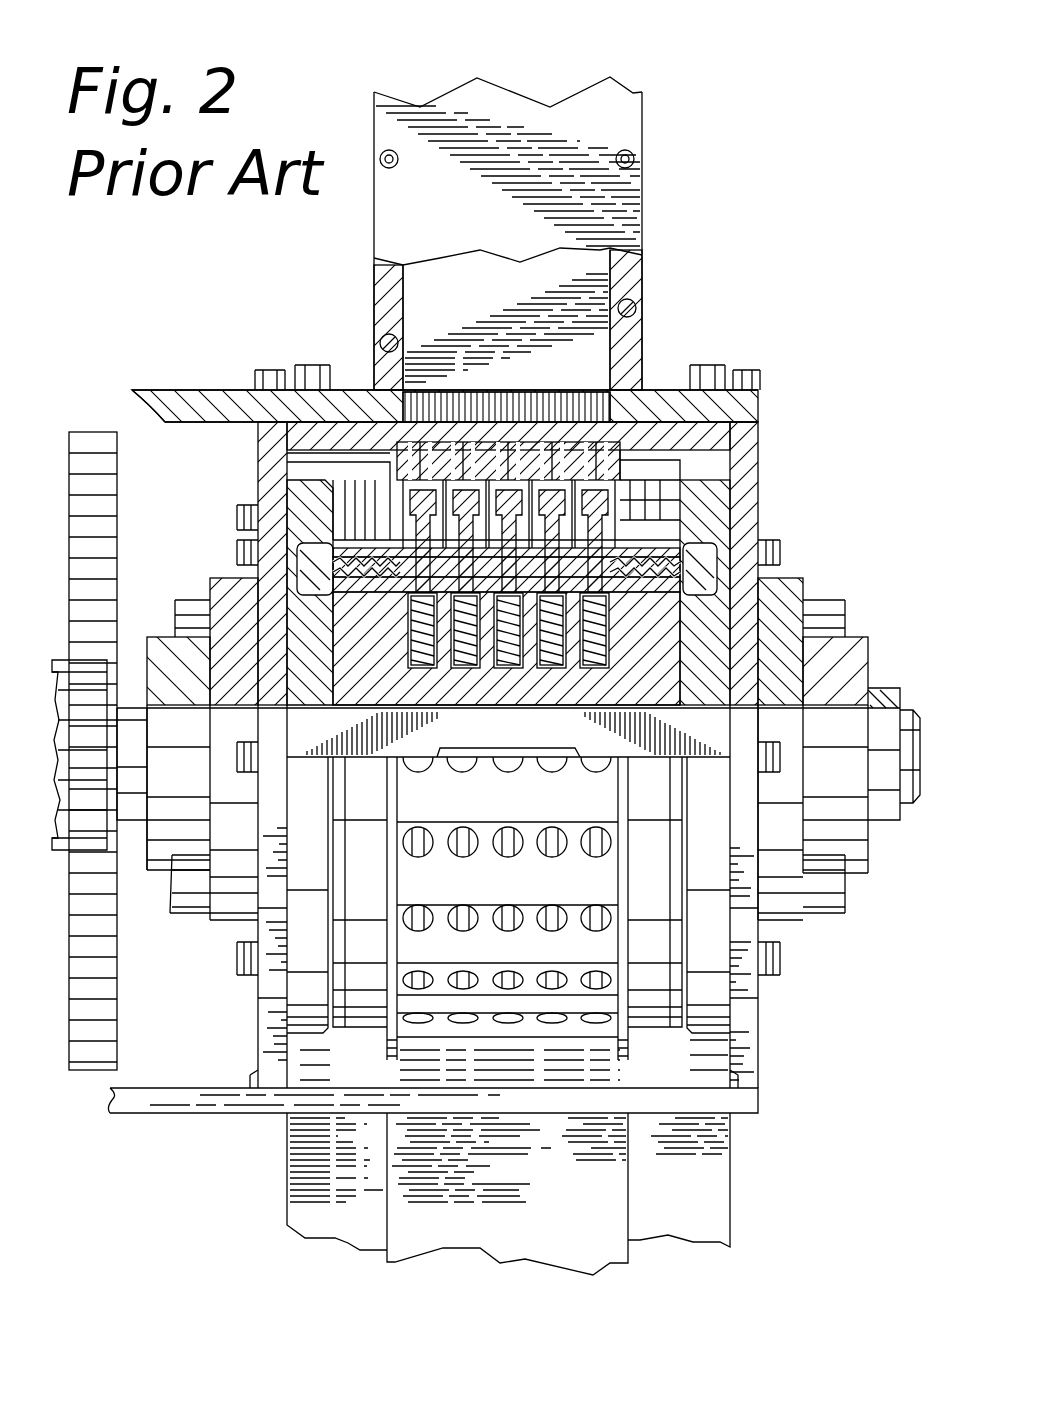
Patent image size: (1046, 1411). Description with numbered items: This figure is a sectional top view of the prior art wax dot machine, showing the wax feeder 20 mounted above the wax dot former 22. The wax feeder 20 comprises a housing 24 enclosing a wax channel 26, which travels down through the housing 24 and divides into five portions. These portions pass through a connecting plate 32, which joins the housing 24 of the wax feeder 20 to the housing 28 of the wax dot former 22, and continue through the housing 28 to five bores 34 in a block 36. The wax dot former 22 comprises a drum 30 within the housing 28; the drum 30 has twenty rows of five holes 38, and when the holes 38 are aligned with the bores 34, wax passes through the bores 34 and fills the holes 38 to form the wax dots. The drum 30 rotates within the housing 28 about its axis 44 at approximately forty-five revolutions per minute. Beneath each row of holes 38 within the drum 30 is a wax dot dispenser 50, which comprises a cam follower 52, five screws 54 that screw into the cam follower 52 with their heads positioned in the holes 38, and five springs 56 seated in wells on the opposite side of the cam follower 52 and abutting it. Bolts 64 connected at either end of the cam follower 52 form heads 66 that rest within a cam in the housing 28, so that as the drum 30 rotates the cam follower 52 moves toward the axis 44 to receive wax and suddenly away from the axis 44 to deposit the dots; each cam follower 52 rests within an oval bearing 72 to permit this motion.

The wax feeder 20 is at (652, 51).
The wax dot former 22 is at (146, 351).
The housing 24 is at (625, 136).
The wax channel 26 is at (494, 290).
The housing 28 is at (755, 445).
The drum 30 is at (520, 1045).
The connecting plate 32 is at (662, 398).
The bores 34 is at (333, 462).
The block 36 is at (735, 466).
The holes 38 is at (420, 490).
The axis 44 is at (914, 708).
The wax dot dispenser 50 is at (626, 607).
The cam follower 52 is at (376, 598).
The screws 54 is at (408, 630).
The springs 56 is at (404, 668).
The bolts 64 is at (330, 582).
The heads 66 is at (312, 604).
The oval bearing 72 is at (720, 530).